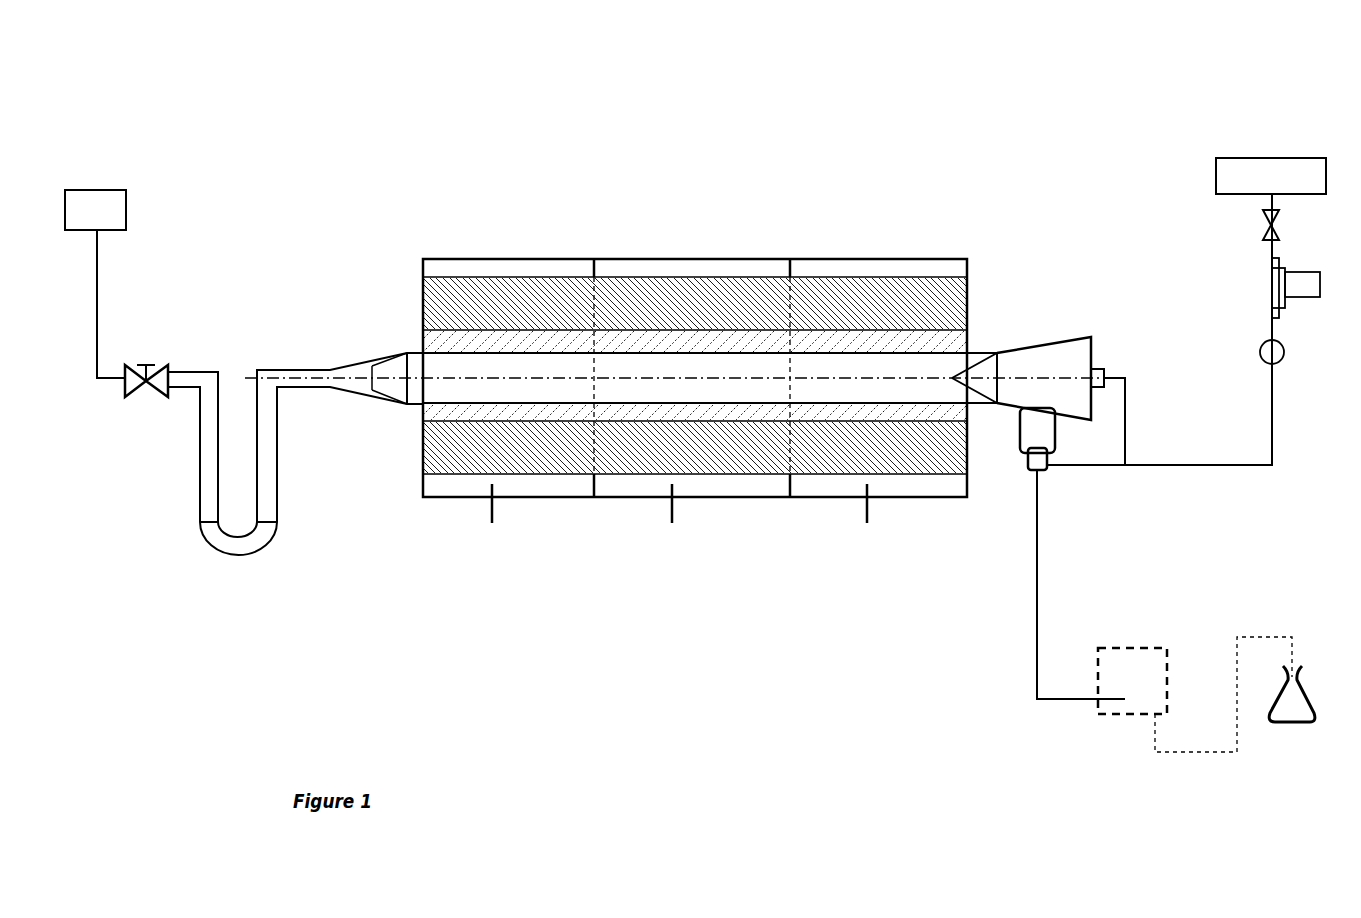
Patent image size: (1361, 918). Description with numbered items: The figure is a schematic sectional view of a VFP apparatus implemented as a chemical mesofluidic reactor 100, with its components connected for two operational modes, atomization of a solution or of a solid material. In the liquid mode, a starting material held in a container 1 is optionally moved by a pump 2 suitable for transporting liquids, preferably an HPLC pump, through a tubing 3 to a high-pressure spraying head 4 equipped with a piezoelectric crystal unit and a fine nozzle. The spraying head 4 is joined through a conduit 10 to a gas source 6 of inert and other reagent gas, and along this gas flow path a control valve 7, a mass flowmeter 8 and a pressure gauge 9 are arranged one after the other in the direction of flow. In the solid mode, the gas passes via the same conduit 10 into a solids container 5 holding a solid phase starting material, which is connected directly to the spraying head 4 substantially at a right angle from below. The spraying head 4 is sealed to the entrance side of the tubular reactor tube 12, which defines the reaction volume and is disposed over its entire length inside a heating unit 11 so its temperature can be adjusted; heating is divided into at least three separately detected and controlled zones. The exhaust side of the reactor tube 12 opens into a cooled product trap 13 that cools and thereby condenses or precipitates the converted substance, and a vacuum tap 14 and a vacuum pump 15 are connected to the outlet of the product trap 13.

The container 1 is at (1308, 653).
The pump 2 is at (1143, 648).
The tubing 3 is at (1035, 522).
The high-pressure spraying head 4 is at (1037, 291).
The solids container 5 is at (1022, 453).
The gas source 6 is at (1271, 176).
The control valve 7 is at (1263, 226).
The mass flowmeter 8 is at (1292, 297).
The pressure gauge 9 is at (1280, 363).
The conduit 10 is at (1272, 468).
The heating unit 11 is at (696, 275).
The reactor tube 12 is at (558, 355).
The cooled product trap 13 is at (263, 543).
The vacuum tap 14 is at (157, 392).
The vacuum pump 15 is at (126, 210).
The chemical mesofluidic reactor 100 is at (900, 128).